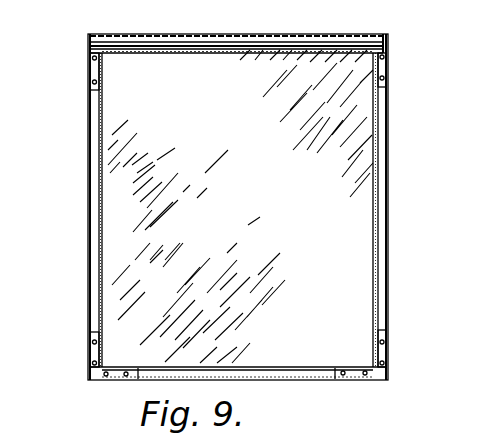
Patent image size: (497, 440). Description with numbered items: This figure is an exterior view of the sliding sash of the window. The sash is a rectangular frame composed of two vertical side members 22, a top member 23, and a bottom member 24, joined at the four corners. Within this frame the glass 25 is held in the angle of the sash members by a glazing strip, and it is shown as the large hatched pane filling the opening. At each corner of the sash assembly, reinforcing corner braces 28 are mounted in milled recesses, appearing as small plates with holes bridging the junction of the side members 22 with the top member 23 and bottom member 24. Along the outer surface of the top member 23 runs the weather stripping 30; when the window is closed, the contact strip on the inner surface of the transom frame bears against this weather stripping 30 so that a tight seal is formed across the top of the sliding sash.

The side members 22 is at (383, 211).
The top member 23 is at (233, 52).
The bottom member 24 is at (303, 381).
The glass 25 is at (250, 225).
The reinforcing corner braces 28 is at (94, 74).
The weather stripping 30 is at (198, 44).